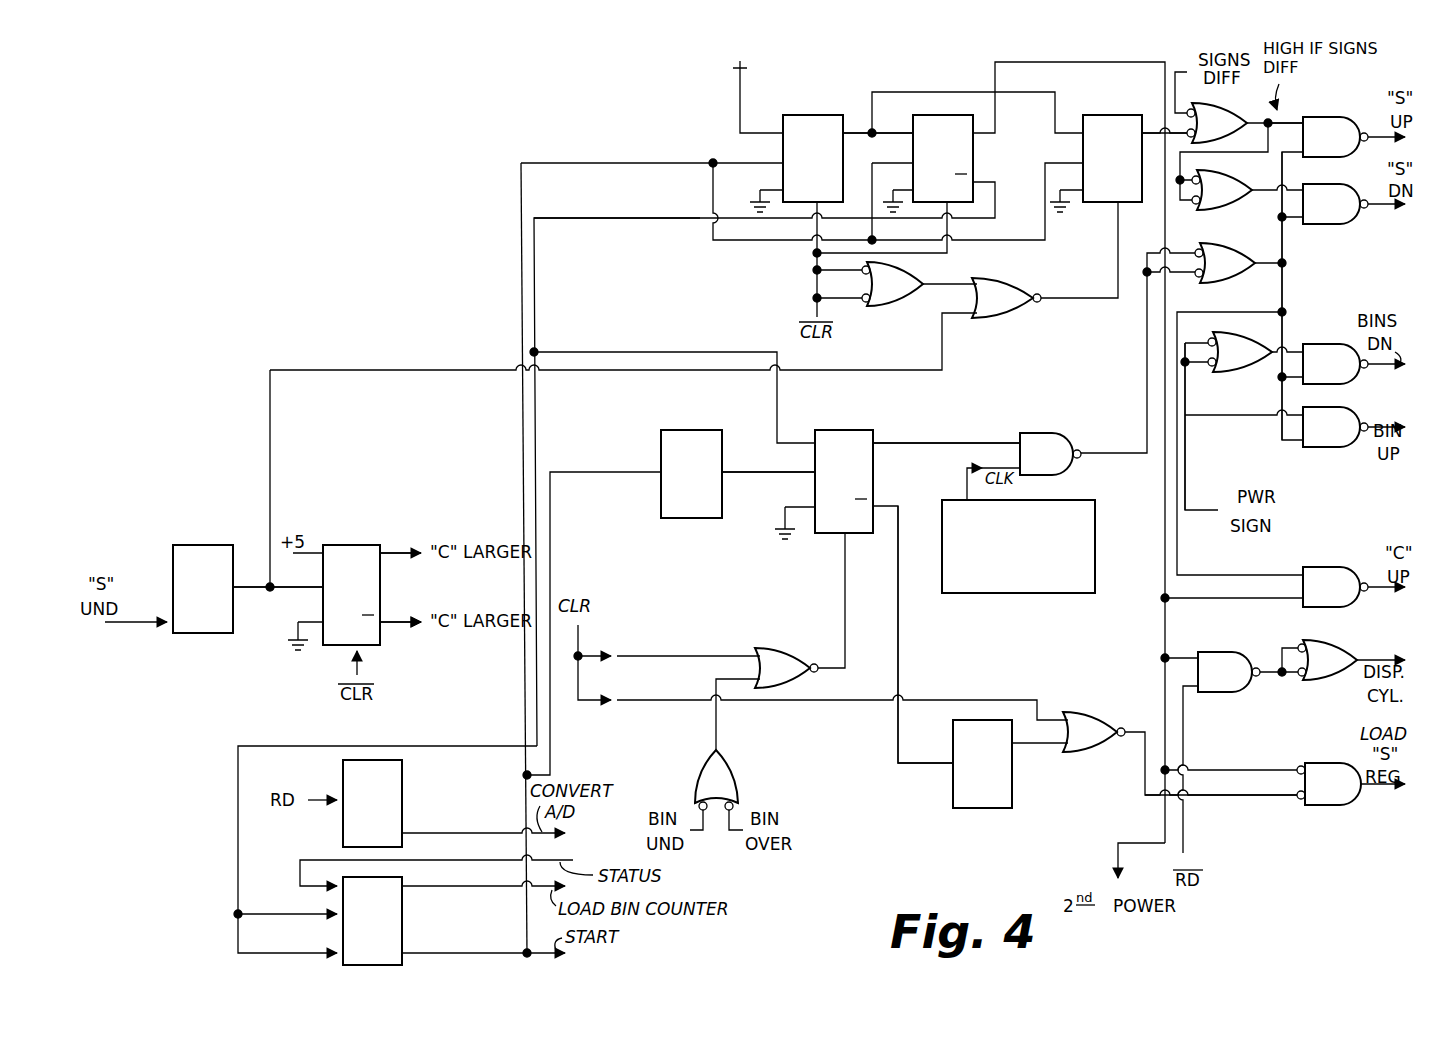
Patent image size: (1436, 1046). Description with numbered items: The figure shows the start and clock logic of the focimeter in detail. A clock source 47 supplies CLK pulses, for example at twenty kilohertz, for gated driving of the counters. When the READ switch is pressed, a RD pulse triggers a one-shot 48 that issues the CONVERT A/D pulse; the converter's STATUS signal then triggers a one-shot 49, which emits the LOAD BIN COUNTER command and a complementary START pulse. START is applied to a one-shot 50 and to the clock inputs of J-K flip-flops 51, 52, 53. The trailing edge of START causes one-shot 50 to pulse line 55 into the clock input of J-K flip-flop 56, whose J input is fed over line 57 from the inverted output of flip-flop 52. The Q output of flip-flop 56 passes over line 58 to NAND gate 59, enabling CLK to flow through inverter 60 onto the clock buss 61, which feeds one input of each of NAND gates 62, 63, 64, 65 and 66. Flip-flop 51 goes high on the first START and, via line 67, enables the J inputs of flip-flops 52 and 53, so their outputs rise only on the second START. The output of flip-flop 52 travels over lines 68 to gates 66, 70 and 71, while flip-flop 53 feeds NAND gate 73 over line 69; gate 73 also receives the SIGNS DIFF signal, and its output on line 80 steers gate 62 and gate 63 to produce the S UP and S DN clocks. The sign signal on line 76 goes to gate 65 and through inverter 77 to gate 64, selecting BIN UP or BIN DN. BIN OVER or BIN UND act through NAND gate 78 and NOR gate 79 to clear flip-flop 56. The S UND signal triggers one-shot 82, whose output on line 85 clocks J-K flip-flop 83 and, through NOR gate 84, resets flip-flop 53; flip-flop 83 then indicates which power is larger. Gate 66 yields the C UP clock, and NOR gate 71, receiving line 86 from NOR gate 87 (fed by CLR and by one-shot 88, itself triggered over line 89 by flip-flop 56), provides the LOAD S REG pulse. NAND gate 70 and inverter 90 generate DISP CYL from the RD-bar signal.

The clock source 47 is at (972, 594).
The one-shot 48 is at (344, 771).
The one-shot 49 is at (403, 912).
The one-shot 50 is at (700, 516).
The J-K flip-flop 51 is at (805, 114).
The J-K flip-flop 52 is at (933, 114).
The J-K flip-flop 53 is at (1120, 114).
The line 55 is at (762, 471).
The J-K flip-flop 56 is at (848, 429).
The line 57 is at (622, 222).
The line 58 is at (980, 442).
The NAND gate 59 is at (1057, 473).
The inverter 60 is at (1226, 283).
The clock buss 61 is at (1284, 302).
The NAND gate 62 is at (1326, 116).
The NAND gate 63 is at (1330, 225).
The NAND gate 64 is at (1345, 384).
The NAND gate 65 is at (1325, 447).
The NAND gate 66 is at (1305, 607).
The line 67 is at (865, 130).
The lines 68 is at (1040, 62).
The line 69 is at (1158, 140).
The NAND gate 70 is at (1210, 692).
The NOR gate 71 is at (1333, 805).
The NAND gate 73 is at (1223, 109).
The line 76 is at (1186, 469).
The inverter 77 is at (1240, 372).
The NAND gate 78 is at (725, 768).
The NOR gate 79 is at (783, 651).
The line 80 is at (1285, 122).
The one-shot 82 is at (205, 545).
The J-K flip-flop 83 is at (360, 545).
The NOR gate 84 is at (990, 318).
The line 85 is at (263, 590).
The line 86 is at (1208, 800).
The NOR gate 87 is at (1090, 752).
The one-shot 88 is at (999, 808).
The line 89 is at (898, 745).
The inverter 90 is at (1325, 678).